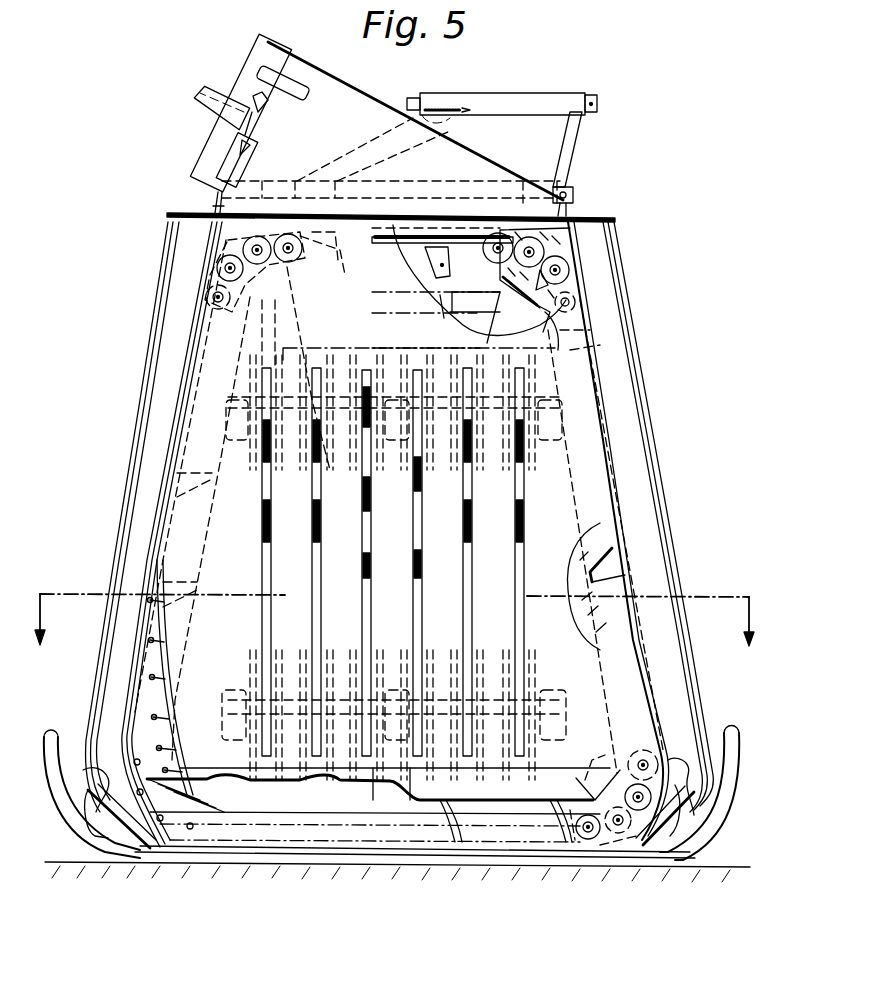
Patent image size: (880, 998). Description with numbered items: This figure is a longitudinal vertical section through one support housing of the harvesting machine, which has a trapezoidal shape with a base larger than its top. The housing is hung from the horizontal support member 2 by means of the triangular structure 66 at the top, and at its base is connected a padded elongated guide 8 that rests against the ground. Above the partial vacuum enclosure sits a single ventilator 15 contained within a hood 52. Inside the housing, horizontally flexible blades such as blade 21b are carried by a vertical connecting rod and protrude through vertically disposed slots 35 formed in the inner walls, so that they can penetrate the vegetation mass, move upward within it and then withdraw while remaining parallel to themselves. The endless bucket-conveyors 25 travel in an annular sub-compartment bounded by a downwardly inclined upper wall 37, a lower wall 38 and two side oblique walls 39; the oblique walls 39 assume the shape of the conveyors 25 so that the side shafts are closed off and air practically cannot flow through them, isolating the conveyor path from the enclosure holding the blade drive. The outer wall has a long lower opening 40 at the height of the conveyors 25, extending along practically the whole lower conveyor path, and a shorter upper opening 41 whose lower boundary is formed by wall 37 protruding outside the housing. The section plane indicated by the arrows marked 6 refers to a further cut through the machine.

The horizontal support member 2 is at (592, 98).
The section line 6- 6 is at (396, 632).
The padded elongated guide 8 is at (58, 806).
The ventilator 15 is at (283, 66).
The horizontally flexible blade 21b is at (262, 528).
The bucket-conveyor 25 is at (464, 312).
The vertically disposed slot 35 is at (265, 480).
The downwardly inclined upper wall 37 is at (475, 327).
The lower wall 38 is at (508, 807).
The side oblique wall 39 is at (552, 388).
The opening 40 is at (597, 780).
The upper opening 41 is at (490, 310).
The hood 52 is at (355, 103).
The triangular structure 66 is at (476, 102).